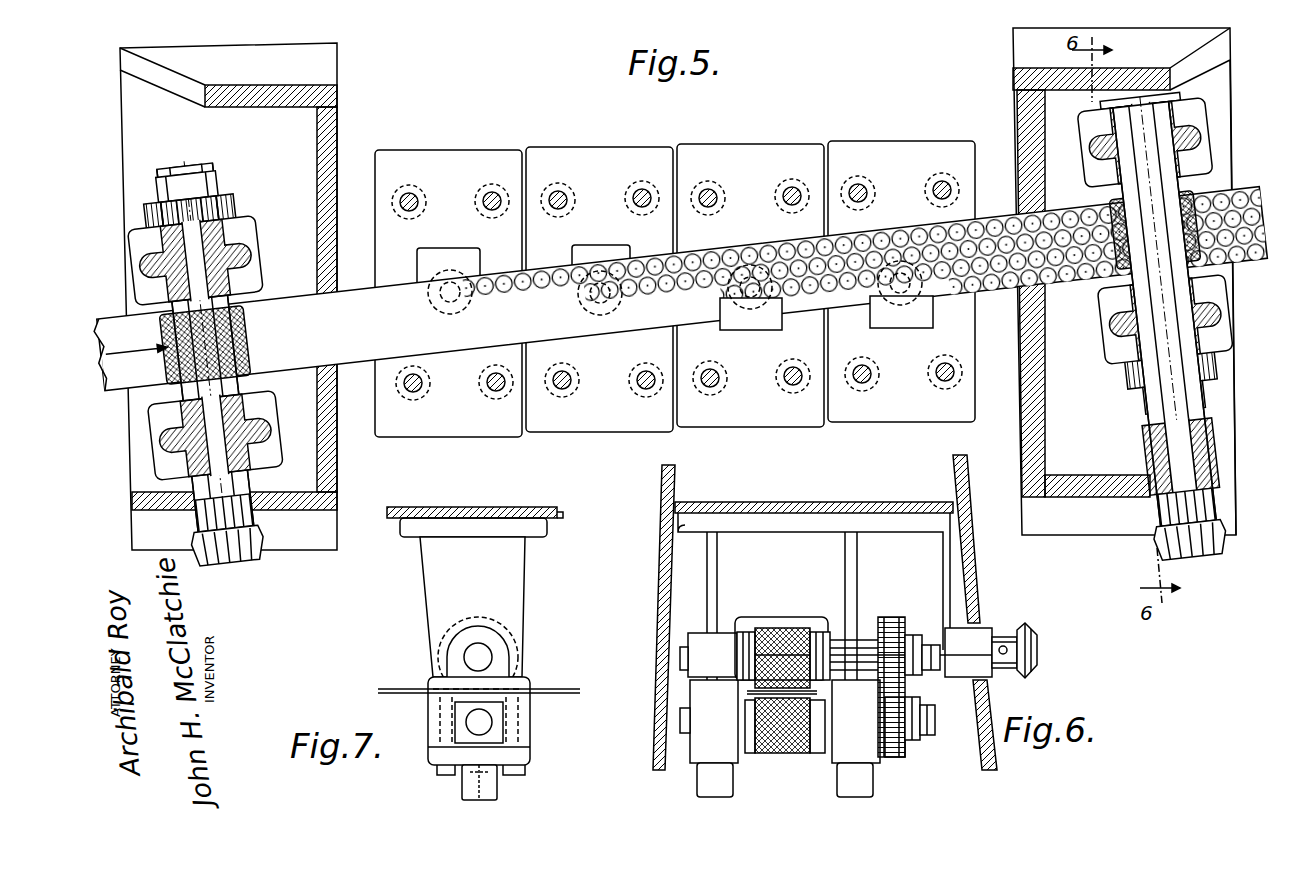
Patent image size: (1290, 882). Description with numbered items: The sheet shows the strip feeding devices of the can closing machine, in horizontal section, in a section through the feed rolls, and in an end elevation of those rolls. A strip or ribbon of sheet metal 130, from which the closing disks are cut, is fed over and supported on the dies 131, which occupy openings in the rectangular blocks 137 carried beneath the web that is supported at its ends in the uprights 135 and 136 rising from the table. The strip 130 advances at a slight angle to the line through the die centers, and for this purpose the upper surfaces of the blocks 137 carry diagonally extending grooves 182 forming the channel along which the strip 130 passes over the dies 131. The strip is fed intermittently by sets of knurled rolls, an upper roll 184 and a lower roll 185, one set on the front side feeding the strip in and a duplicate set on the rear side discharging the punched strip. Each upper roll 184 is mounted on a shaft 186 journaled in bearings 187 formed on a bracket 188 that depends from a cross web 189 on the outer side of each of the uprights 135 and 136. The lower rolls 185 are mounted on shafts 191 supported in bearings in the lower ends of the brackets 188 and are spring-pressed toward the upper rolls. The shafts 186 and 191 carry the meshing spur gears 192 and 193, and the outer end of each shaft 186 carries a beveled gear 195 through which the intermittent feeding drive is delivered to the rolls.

In FIG. 5, the strip of sheet metal 130 is at (680, 289).
In FIG. 7, the strip of sheet metal 130 is at (573, 690).
In FIG. 6, the strip of sheet metal 130 is at (740, 690).
In FIG. 5, the dies 131 is at (470, 248).
In FIG. 5, the upright 135 is at (343, 462).
In FIG. 5, the upright 136 is at (1040, 458).
In FIG. 6, the upright 136 is at (662, 540).
In FIG. 5, the rectangular blocks 137 is at (503, 427).
In FIG. 5, the diagonally extending grooves 182 is at (560, 262).
In FIG. 5, the upper roll 184 is at (250, 310).
In FIG. 7, the upper roll 184 is at (503, 642).
In FIG. 6, the upper roll 184 is at (797, 628).
In FIG. 7, the lower roll 185 is at (520, 755).
In FIG. 6, the lower roll 185 is at (780, 752).
In FIG. 5, the shaft 186 is at (196, 246).
In FIG. 7, the shaft 186 is at (470, 655).
In FIG. 6, the shaft 186 is at (928, 640).
In FIG. 5, the bearings 187 is at (1147, 435).
In FIG. 6, the bearings 187 is at (690, 643).
In FIG. 7, the bracket 188 is at (508, 590).
In FIG. 6, the bracket 188 is at (727, 565).
In FIG. 7, the cross web 189 is at (560, 510).
In FIG. 6, the cross web 189 is at (768, 503).
In FIG. 7, the shaft 191 is at (492, 722).
In FIG. 6, the shaft 191 is at (943, 715).
In FIG. 5, the spur gear 192 is at (228, 195).
In FIG. 6, the spur gear 192 is at (890, 625).
In FIG. 6, the spur gear 193 is at (893, 752).
In FIG. 5, the beveled gear 195 is at (257, 548).
In FIG. 6, the beveled gear 195 is at (1030, 633).